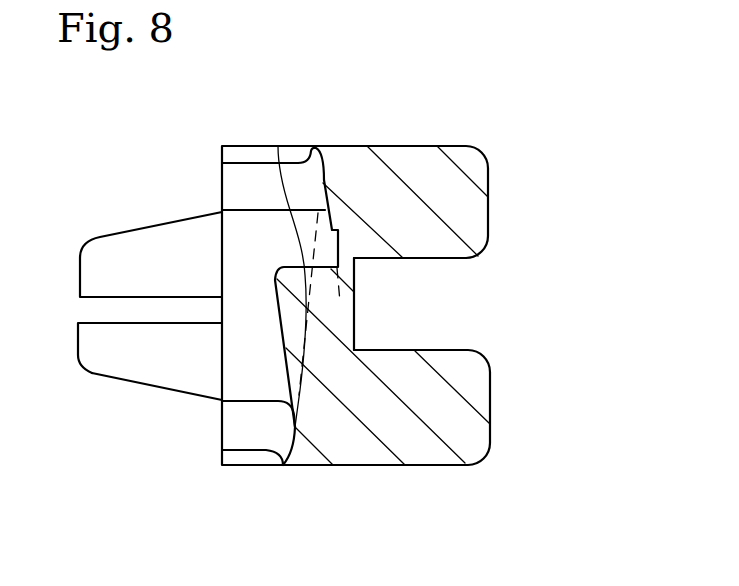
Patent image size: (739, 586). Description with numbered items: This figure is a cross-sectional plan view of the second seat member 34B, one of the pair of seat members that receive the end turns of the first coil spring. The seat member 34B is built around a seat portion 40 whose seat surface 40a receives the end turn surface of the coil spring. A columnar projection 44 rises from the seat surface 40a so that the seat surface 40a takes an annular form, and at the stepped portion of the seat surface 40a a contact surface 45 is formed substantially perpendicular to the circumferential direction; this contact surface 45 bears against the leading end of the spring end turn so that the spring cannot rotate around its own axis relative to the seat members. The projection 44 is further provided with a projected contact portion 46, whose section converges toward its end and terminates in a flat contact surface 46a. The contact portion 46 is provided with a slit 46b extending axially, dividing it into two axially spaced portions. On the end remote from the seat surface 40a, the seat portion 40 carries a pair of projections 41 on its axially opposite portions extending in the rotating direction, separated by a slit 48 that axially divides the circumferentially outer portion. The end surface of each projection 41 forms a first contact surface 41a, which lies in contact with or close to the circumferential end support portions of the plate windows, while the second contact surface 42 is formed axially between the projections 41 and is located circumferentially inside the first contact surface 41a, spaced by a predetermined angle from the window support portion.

The second seat member 34B is at (408, 53).
The seat portion 40 is at (327, 350).
The seat surface 40a is at (272, 449).
The projection 41 is at (470, 189).
The first contact surface 41a is at (490, 218).
The second contact surface 42 is at (355, 295).
The columnar projection 44 is at (240, 280).
The contact surface 45 is at (278, 146).
The contact portion 46 is at (117, 287).
The flat contact surface 46a is at (77, 352).
The slit 46b is at (128, 322).
The slit 48 is at (478, 301).